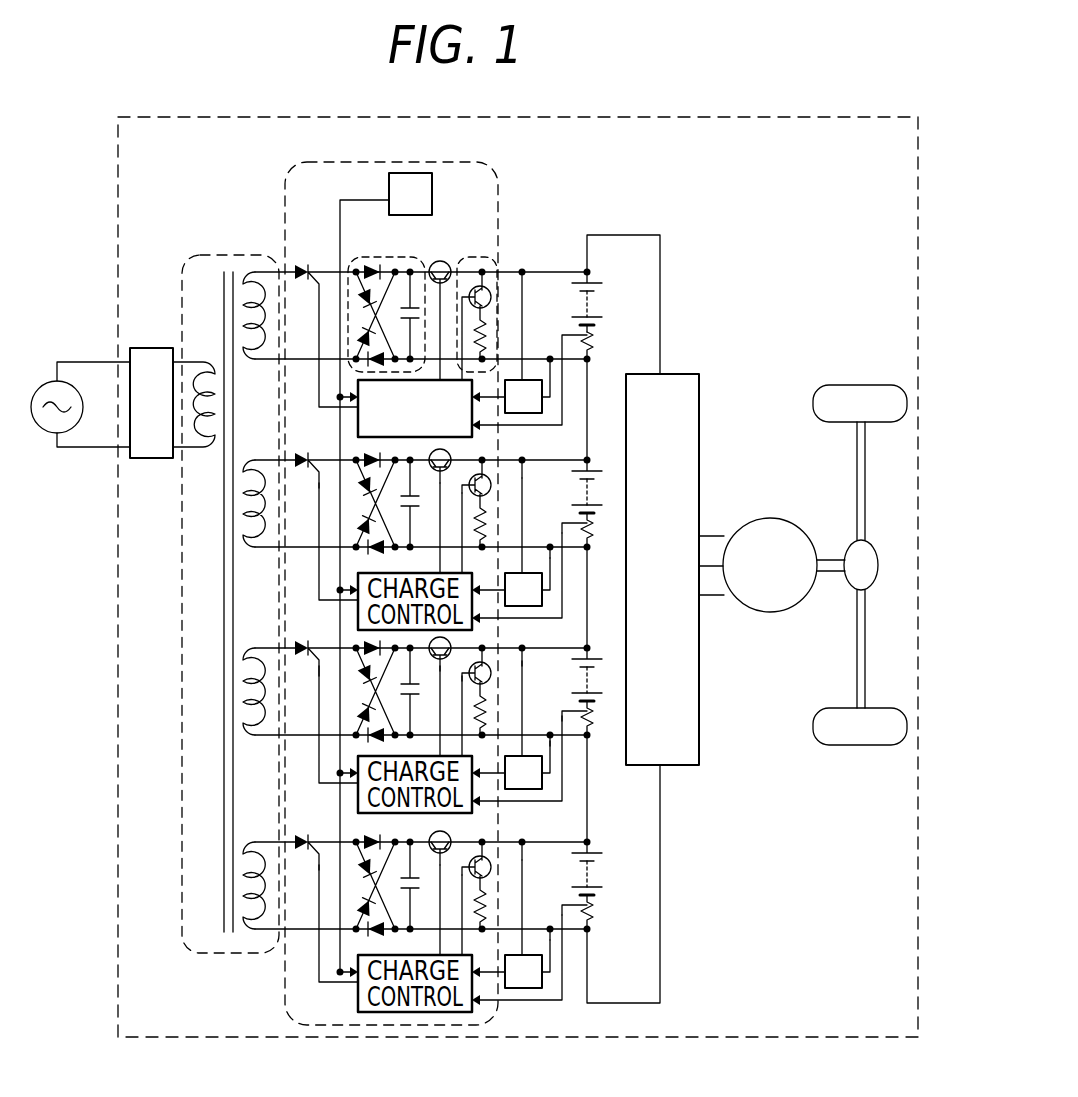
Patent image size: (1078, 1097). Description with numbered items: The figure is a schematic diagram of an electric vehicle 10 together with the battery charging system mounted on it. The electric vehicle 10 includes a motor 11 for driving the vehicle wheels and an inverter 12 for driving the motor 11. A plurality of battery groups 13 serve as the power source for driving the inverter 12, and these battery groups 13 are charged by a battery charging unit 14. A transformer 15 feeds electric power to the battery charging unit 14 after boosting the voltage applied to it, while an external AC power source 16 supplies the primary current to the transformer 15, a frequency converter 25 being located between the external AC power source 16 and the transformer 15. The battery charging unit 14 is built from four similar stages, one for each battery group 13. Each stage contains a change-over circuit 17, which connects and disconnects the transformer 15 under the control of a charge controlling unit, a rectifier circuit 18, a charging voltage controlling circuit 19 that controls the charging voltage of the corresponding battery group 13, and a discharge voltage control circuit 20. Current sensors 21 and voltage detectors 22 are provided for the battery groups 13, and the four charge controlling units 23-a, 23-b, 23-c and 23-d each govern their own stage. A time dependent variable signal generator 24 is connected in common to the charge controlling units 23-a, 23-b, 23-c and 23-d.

The electric vehicle 10 is at (786, 116).
The motor 11 is at (783, 521).
The inverter 12 is at (702, 396).
The battery groups 13 is at (605, 295).
The battery charging unit 14 is at (543, 173).
The transformer 15 is at (210, 254).
The external AC power source 16 is at (76, 393).
The change-over circuits 17 is at (295, 267).
The rectifier circuits 18 is at (362, 256).
The charging voltage controlling circuits 19 is at (440, 261).
The discharge voltage control circuits 20 is at (480, 258).
The current sensors 21 is at (598, 346).
The voltage detectors 22 is at (527, 377).
The charge controlling unit 23-a is at (358, 412).
The charge controlling unit 23-b is at (358, 606).
The charge controlling unit 23-c is at (357, 798).
The charge controlling unit 23-d is at (358, 983).
The time dependent variable signal generator 24 is at (432, 195).
The frequency converter 25 is at (150, 348).